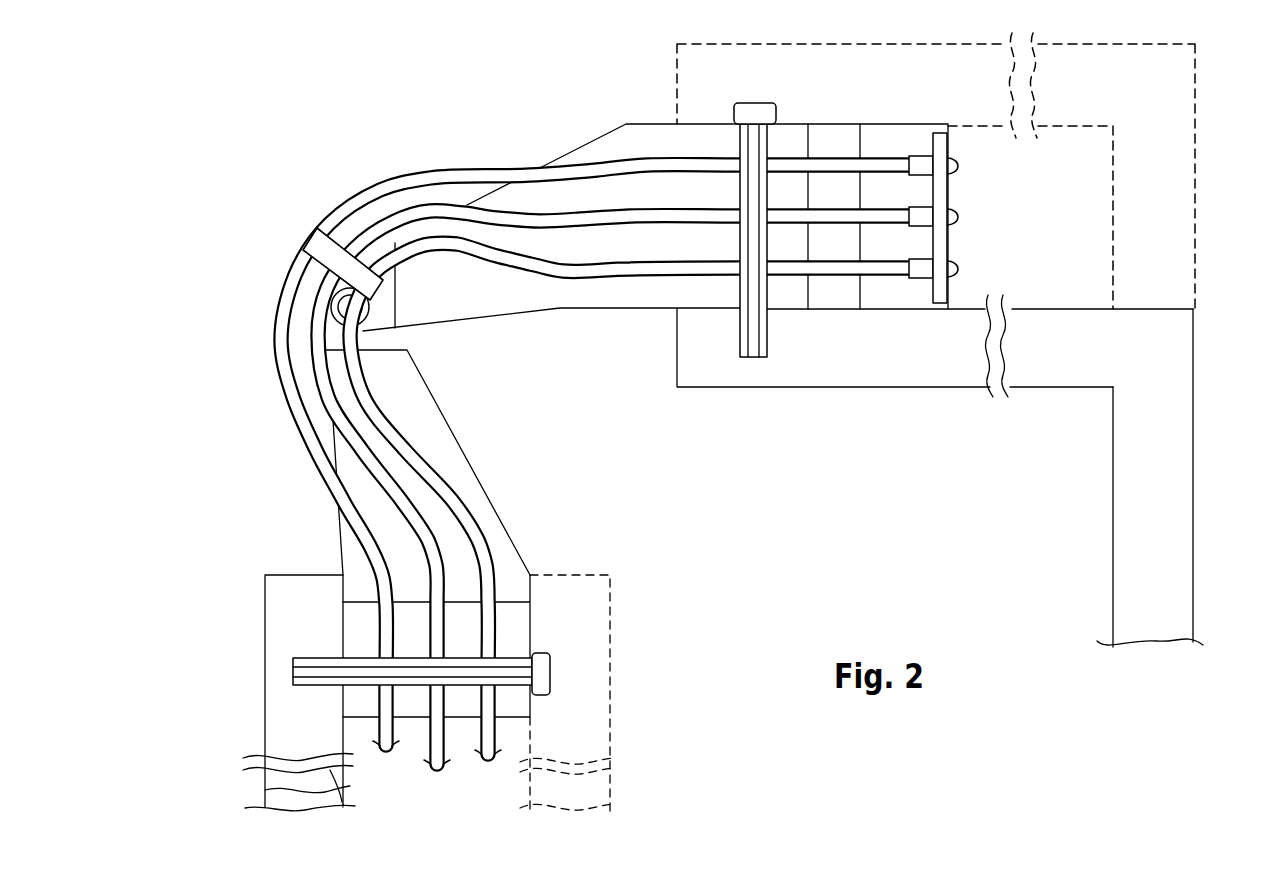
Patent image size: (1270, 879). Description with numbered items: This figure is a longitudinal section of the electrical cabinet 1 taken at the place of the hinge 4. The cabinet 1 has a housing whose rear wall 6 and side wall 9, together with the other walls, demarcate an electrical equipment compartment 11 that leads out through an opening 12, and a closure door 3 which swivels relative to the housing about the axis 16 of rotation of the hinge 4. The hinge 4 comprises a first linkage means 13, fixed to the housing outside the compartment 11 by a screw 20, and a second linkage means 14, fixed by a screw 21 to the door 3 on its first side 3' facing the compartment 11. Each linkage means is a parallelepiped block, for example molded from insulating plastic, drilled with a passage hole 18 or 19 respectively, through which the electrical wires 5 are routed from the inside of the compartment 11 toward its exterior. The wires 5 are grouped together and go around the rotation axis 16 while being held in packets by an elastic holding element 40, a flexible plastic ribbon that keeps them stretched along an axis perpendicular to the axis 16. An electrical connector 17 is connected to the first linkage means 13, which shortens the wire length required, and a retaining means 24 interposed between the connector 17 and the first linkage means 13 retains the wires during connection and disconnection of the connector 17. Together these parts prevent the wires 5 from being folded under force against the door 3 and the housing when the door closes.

The cabinet 1 is at (473, 348).
The closure door 3 is at (288, 749).
The first side of the door 3' is at (370, 788).
The hinge 4 is at (365, 650).
The electrical wires 5 is at (455, 168).
The rear wall 6 is at (1147, 490).
The side wall 9 is at (895, 343).
The electrical equipment compartment 11 is at (936, 279).
The opening 12 is at (575, 718).
The first linkage means 13 is at (790, 144).
The second linkage means 14 is at (360, 588).
The axis of rotation 16 is at (343, 303).
The electrical connector 17 is at (897, 145).
The passage hole 18 is at (702, 140).
The passage hole 19 is at (483, 470).
The screw 20 is at (753, 327).
The screw 21 is at (513, 670).
The retaining means 24 is at (834, 136).
The elastic holding element 40 is at (312, 235).